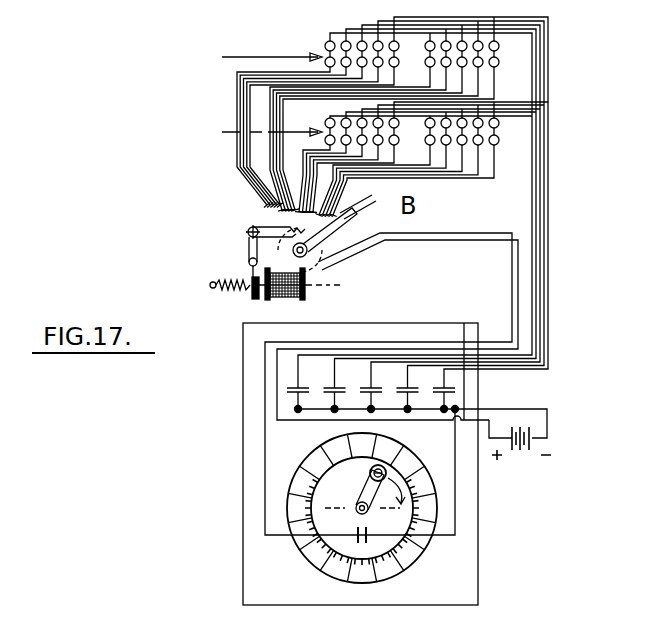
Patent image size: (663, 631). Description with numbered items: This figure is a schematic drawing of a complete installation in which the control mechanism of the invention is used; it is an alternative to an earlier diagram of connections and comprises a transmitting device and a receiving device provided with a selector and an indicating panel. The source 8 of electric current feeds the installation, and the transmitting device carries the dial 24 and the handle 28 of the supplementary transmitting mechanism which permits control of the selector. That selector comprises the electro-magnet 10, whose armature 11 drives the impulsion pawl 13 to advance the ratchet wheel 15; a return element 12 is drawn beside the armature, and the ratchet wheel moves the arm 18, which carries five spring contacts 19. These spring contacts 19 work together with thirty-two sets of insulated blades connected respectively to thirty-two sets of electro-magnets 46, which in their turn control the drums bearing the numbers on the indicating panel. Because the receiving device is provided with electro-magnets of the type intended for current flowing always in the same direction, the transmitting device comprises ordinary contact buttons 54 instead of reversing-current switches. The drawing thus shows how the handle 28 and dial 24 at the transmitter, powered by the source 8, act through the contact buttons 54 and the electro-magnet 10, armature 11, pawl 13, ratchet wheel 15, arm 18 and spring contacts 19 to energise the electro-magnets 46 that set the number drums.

The electro-magnets 46 is at (326, 44).
The spring contacts 19 is at (369, 198).
The arm 18 is at (354, 214).
The ratchet wheel 15 is at (345, 262).
The impulsion pawl 13 is at (272, 225).
The spring 12 is at (222, 280).
The armature 11 is at (254, 292).
The electro-magnet 10 is at (288, 299).
The contact buttons 54 is at (378, 389).
The source of electric current 8 is at (515, 452).
The handle 28 is at (375, 498).
The dial 24 is at (320, 560).